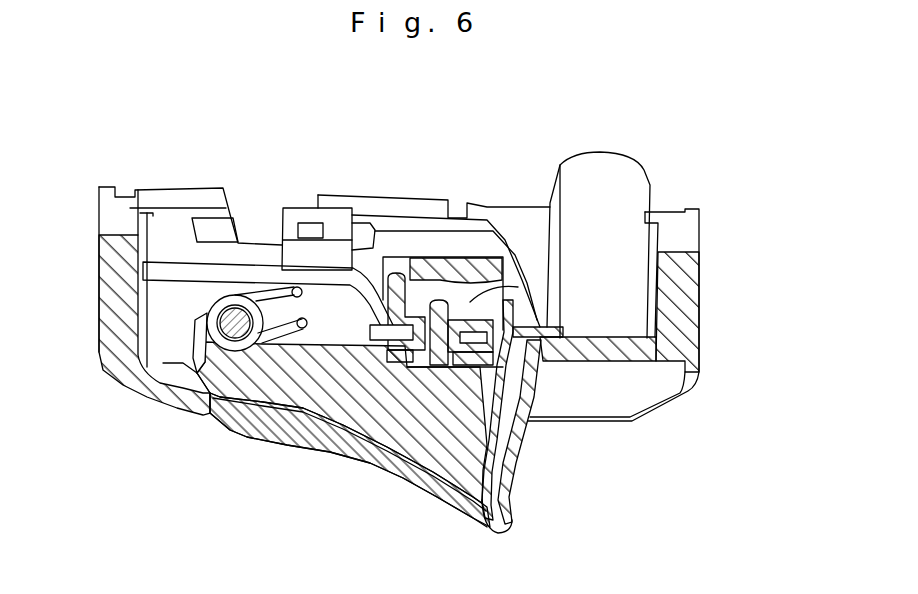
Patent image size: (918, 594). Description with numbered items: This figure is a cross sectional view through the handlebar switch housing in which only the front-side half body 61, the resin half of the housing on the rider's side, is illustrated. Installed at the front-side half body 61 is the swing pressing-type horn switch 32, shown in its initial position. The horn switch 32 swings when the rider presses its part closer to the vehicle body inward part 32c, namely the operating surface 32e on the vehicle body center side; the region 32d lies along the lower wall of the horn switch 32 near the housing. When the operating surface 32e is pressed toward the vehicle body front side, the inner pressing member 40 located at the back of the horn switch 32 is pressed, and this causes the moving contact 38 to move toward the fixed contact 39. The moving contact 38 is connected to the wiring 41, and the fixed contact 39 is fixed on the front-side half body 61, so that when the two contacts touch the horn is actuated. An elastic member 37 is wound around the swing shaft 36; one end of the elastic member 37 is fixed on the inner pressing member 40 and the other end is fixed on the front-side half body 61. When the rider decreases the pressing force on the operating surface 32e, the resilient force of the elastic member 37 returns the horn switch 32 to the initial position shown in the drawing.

The horn switch 32 is at (381, 472).
The vehicle body inward part 32c is at (510, 513).
The engaging projection of lower case 32d is at (212, 413).
The operating surface 32e is at (434, 503).
The swing shaft 36 is at (185, 372).
The elastic member 37 is at (260, 352).
The moving contact 38 is at (517, 367).
The fixed contact 39 is at (522, 290).
The inner pressing member 40 is at (345, 397).
The wiring 41 is at (177, 263).
The front-side half body 61 is at (114, 290).